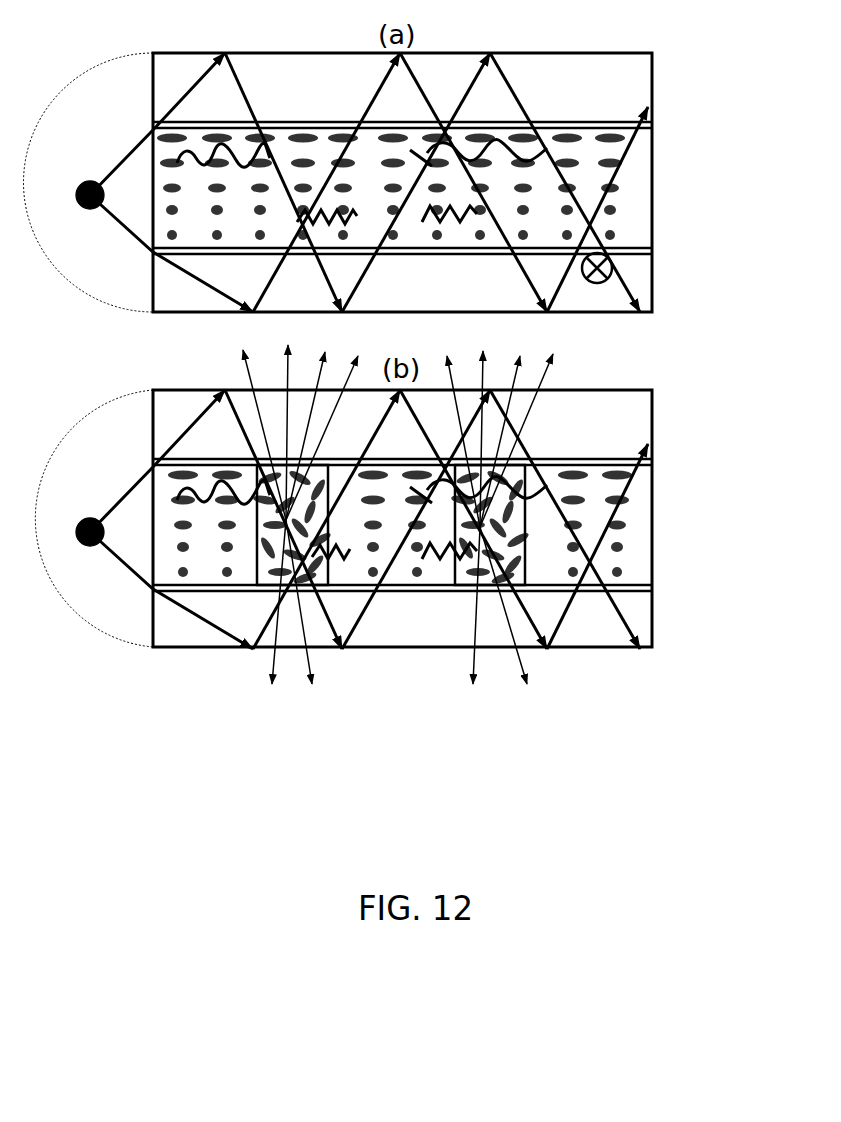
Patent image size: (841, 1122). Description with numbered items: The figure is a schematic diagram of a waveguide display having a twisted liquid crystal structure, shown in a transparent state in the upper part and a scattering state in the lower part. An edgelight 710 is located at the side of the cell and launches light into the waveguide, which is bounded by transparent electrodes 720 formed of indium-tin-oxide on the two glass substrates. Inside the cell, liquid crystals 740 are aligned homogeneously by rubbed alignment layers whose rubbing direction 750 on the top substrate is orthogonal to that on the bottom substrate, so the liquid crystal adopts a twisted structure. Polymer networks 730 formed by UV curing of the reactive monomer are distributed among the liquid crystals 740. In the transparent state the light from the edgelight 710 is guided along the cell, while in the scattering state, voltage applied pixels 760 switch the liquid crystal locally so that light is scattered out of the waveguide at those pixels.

The edgelight 710 is at (89, 350).
The transparent electrodes 720 is at (650, 127).
The polymer networks 730 is at (465, 215).
The liquid crystals 740 is at (612, 212).
The rubbing direction 750 is at (613, 110).
The voltage applied pixels 760 is at (257, 587).